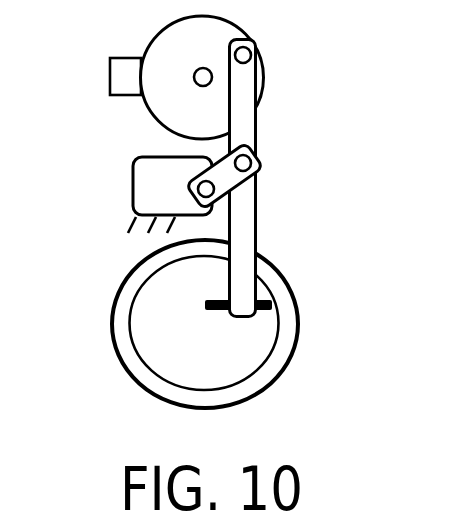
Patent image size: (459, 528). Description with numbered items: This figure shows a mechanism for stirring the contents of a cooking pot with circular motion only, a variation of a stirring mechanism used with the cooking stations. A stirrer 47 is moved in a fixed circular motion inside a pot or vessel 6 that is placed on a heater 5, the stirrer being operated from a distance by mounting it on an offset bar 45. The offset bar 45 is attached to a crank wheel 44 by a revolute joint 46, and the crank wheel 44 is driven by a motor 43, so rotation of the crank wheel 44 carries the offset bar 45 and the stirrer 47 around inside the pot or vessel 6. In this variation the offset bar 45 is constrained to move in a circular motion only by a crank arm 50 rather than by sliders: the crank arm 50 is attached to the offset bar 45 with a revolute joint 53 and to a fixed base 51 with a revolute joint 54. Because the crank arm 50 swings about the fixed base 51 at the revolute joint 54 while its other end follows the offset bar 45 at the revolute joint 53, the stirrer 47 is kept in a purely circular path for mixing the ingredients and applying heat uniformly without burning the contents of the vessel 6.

The heater 5 is at (135, 385).
The pot or vessel 6 is at (275, 313).
The motor 43 is at (110, 77).
The crank wheel 44 is at (250, 35).
The offset bar 45 is at (250, 187).
The revolute joint 46 is at (249, 64).
The stirrer 47 is at (207, 303).
The crank arm 50 is at (207, 197).
The fixed base 51 is at (133, 207).
The revolute joint 53 is at (262, 166).
The revolute joint 54 is at (198, 186).